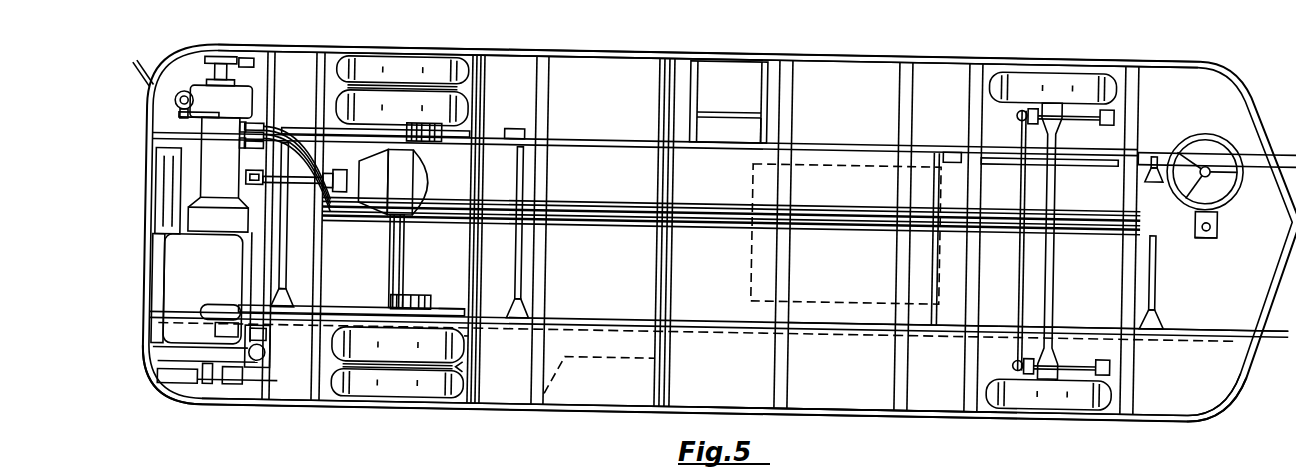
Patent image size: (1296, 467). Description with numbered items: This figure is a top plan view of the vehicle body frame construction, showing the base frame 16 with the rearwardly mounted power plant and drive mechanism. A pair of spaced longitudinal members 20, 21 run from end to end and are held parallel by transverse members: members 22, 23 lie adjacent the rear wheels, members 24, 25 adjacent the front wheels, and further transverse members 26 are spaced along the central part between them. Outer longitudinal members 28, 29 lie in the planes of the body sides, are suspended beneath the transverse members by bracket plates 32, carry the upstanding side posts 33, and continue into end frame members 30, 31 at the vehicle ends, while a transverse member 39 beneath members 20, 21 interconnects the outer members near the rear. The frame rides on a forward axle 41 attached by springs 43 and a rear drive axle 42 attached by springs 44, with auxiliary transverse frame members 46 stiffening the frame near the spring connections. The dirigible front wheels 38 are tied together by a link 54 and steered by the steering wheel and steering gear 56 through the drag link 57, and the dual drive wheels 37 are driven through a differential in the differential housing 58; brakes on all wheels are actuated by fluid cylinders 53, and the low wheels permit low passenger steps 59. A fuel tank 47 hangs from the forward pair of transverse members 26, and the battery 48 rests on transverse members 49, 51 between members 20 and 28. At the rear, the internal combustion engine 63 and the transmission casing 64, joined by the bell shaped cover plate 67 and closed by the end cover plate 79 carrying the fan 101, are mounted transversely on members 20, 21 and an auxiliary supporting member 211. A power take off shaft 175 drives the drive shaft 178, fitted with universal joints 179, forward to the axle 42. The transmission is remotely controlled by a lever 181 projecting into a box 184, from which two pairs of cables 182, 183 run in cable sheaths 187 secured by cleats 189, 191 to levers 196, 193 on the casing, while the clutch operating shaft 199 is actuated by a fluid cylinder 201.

The base frame 16 is at (845, 407).
The longitudinal member 20 is at (600, 142).
The longitudinal member 21 is at (587, 322).
The transverse member 22 is at (322, 285).
The transverse member 23 is at (455, 296).
The transverse member 24 is at (973, 313).
The transverse member 25 is at (1126, 298).
The transverse members 26 is at (542, 283).
The longitudinal member 28 is at (612, 53).
The longitudinal member 29 is at (597, 412).
The end frame member 30 is at (1255, 355).
The end frame member 31 is at (143, 250).
The plates 32 is at (468, 372).
The side posts 33 is at (548, 44).
The drive wheels 37 is at (436, 398).
The wheels 38 is at (1070, 400).
The transverse member 39 is at (270, 268).
The axle 41 is at (1048, 279).
The axle 42 is at (392, 267).
The springs 43 is at (1080, 159).
The springs 44 is at (340, 312).
The auxiliary transverse frame members 46 is at (284, 270).
The fuel tank 47 is at (750, 261).
The battery 48 is at (729, 81).
The transverse member 49 is at (700, 113).
The transverse member 51 is at (759, 124).
The fluid cylinders 53 is at (427, 308).
The link 54 is at (1022, 255).
The steering wheel and steering gear 56 is at (1226, 137).
The drag link 57 is at (1141, 143).
The differential housing 58 is at (412, 192).
The passenger steps 59 is at (578, 359).
The internal combustion engine 63 is at (215, 308).
The casing 64 is at (220, 127).
The bell shaped cover plate 67 is at (218, 220).
The end cover plate 79 is at (244, 381).
The fan 101 is at (242, 66).
The power take off shaft 175 is at (218, 202).
The drive shaft 178 is at (296, 190).
The universal joints 179 is at (346, 180).
The lever 181 is at (1217, 219).
The cables 182 is at (690, 222).
The cables 183 is at (595, 207).
The box 184 is at (1197, 232).
The cable sheaths 187 is at (268, 142).
The cleat 189 is at (333, 212).
The cleat 191 is at (252, 131).
The lever 193 is at (226, 130).
The lever 196 is at (225, 147).
The operating shaft 199 is at (206, 126).
The fluid cylinder 201 is at (181, 102).
The auxiliary supporting member 211 is at (153, 373).